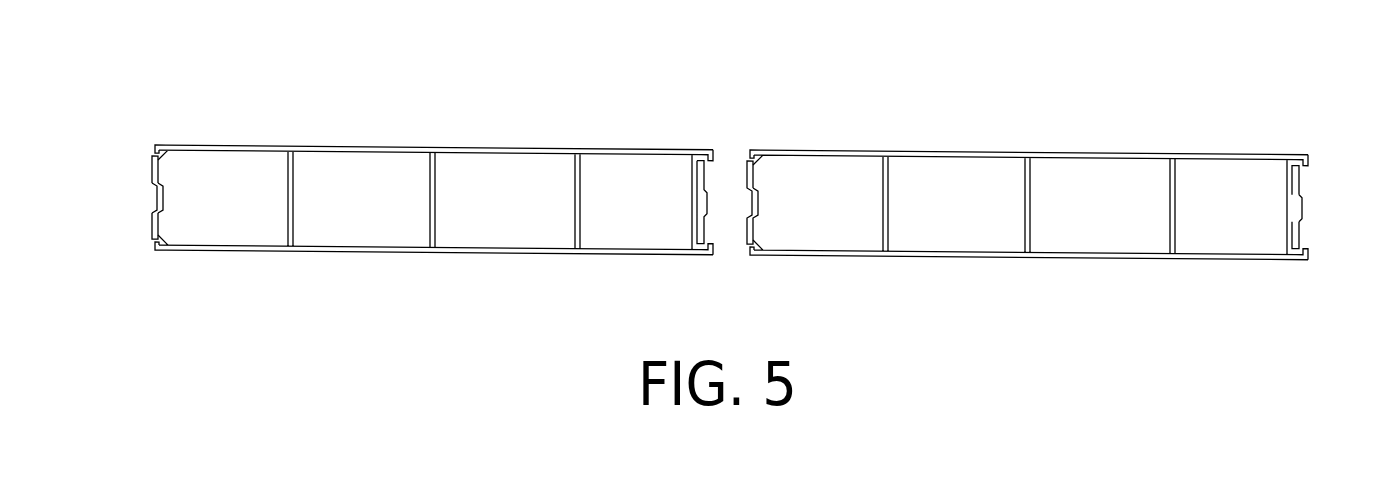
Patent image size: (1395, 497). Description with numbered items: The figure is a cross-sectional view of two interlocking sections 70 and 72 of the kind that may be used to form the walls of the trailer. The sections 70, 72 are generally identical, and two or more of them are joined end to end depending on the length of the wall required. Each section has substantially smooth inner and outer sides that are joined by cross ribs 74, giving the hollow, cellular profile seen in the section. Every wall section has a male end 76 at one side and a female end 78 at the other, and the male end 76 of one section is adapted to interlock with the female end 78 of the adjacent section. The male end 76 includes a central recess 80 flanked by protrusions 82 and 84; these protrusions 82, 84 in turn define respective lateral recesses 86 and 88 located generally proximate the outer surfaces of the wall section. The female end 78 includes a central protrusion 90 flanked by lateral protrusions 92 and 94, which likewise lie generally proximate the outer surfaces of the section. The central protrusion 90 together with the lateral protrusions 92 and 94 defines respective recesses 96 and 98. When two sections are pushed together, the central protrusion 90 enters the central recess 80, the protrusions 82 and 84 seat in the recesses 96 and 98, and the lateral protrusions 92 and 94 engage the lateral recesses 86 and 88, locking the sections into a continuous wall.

The interlocking section 70 is at (354, 128).
The interlocking section 72 is at (1040, 132).
The cross rib 74 is at (435, 197).
The male end 76 is at (762, 129).
The female end 78 is at (719, 129).
The central recess 80 is at (150, 197).
The protrusion 82 is at (150, 166).
The protrusion 84 is at (150, 231).
The lateral recess 86 is at (155, 141).
The lateral recess 88 is at (162, 247).
The central protrusion 90 is at (1303, 208).
The lateral protrusion 92 is at (1312, 162).
The lateral protrusion 94 is at (1310, 257).
The recess 96 is at (1297, 184).
The recess 98 is at (1295, 233).